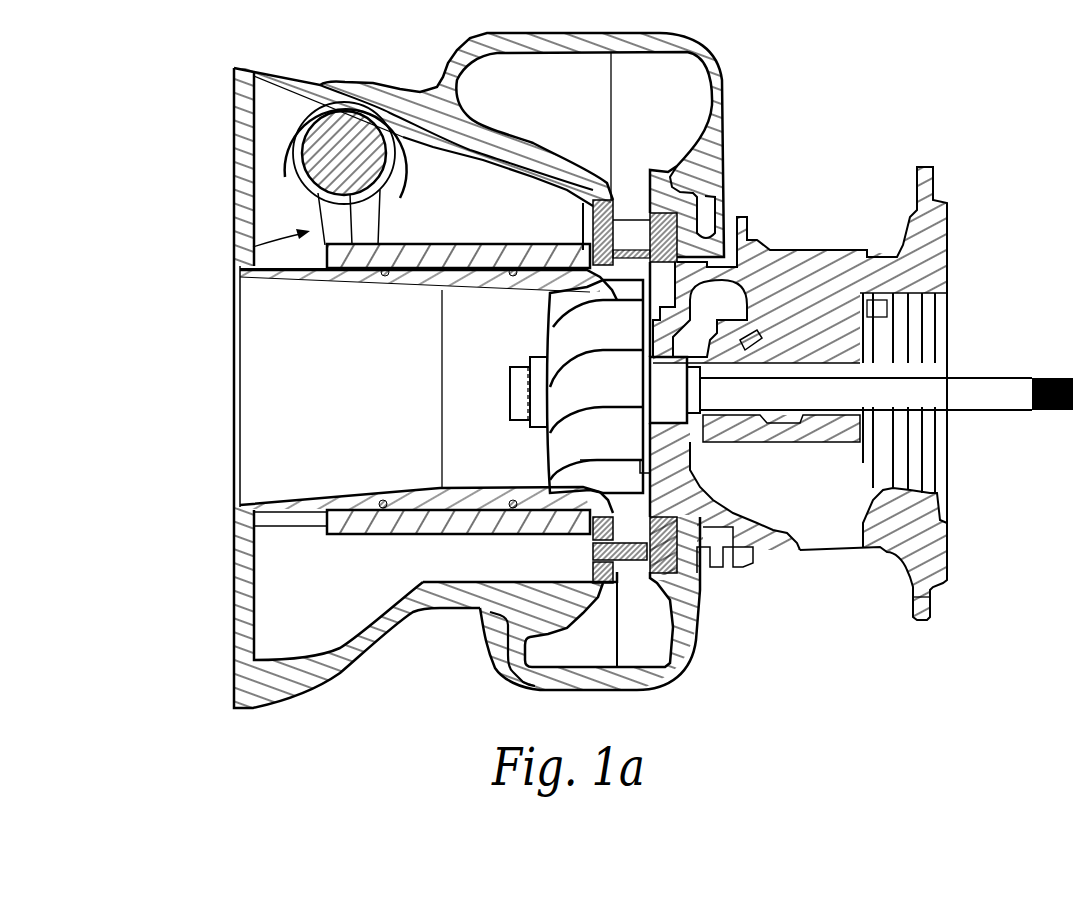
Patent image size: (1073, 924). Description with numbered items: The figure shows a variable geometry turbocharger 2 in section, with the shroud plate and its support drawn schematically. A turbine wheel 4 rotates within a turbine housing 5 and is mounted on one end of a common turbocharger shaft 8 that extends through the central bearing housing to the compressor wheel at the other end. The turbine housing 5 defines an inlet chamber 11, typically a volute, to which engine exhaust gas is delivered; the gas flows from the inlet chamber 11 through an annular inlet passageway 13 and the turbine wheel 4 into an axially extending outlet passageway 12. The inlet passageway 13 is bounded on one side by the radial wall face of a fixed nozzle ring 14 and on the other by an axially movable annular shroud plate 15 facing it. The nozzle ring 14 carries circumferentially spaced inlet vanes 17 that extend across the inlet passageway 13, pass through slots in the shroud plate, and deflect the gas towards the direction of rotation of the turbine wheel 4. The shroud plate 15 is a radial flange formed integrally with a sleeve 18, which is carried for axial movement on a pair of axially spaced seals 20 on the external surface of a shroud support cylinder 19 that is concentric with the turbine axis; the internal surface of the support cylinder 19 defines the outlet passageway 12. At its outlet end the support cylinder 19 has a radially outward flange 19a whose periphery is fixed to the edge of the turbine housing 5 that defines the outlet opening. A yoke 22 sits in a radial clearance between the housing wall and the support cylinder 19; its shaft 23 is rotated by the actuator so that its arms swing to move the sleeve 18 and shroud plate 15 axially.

The turbocharger compressor assembly 2 is at (610, 401).
The turbine wheel 4 is at (563, 445).
The turbine housing 5 is at (402, 92).
The turbocharger shaft 8 is at (997, 405).
The inlet chamber 11 is at (640, 653).
The outlet passageway 12 is at (257, 397).
The annular inlet passageway 13 is at (673, 187).
The nozzle ring 14 is at (680, 235).
The shroud plate 15 is at (637, 203).
The inlet vanes 17 is at (627, 560).
The sleeve 18 is at (357, 517).
The shroud support cylinder 19 is at (357, 280).
The radially outwards extending flange 19a is at (245, 638).
The seals 20 is at (372, 493).
The yoke 22 is at (253, 247).
The shaft 23 is at (322, 162).